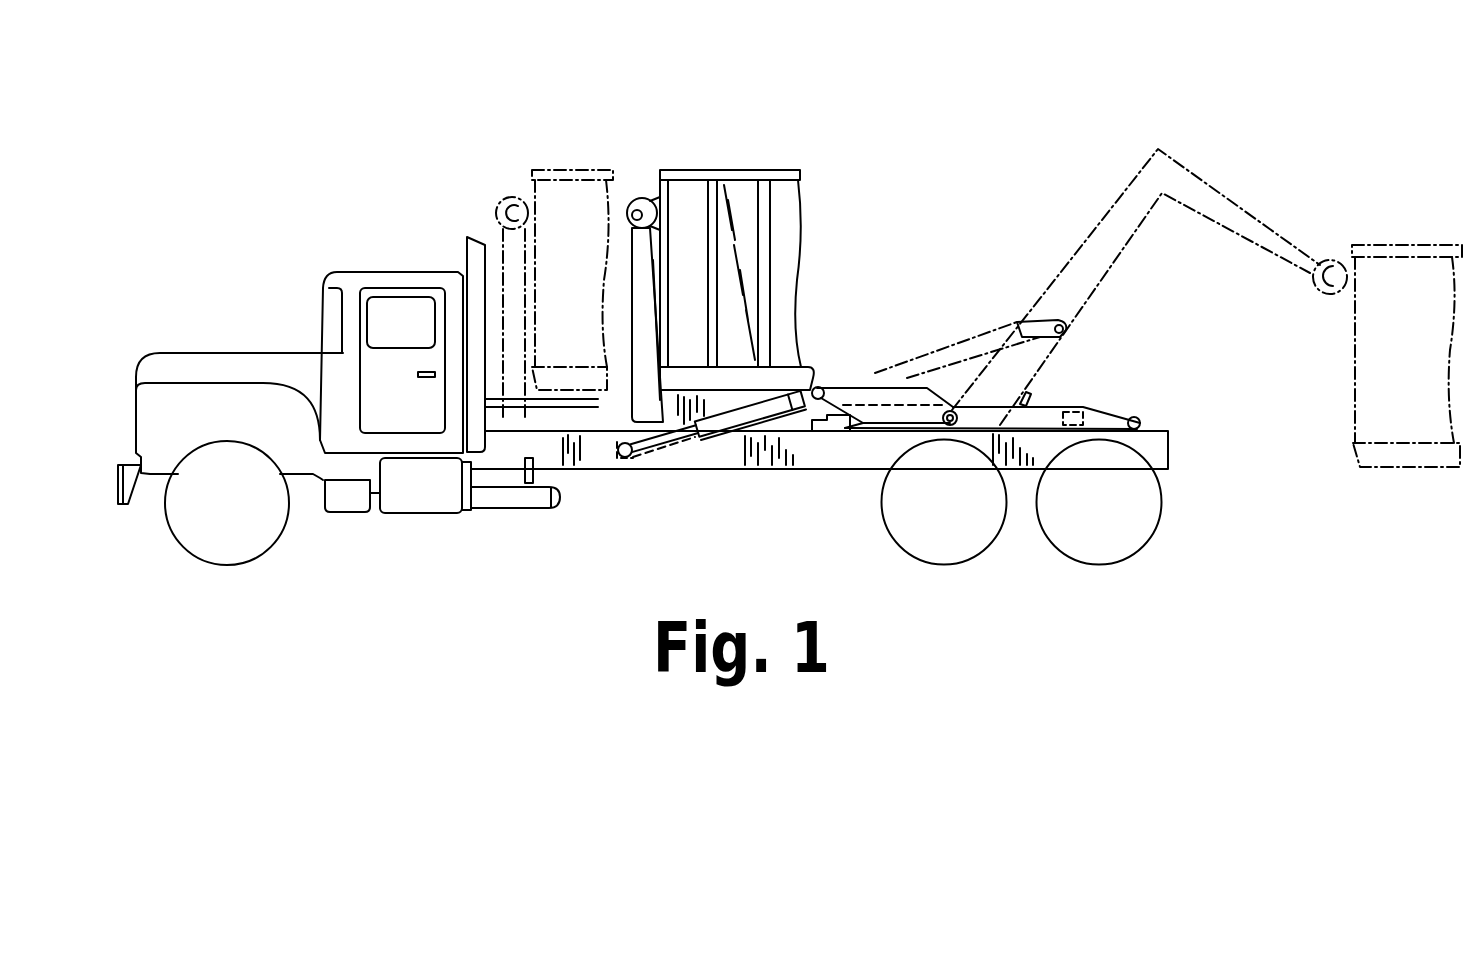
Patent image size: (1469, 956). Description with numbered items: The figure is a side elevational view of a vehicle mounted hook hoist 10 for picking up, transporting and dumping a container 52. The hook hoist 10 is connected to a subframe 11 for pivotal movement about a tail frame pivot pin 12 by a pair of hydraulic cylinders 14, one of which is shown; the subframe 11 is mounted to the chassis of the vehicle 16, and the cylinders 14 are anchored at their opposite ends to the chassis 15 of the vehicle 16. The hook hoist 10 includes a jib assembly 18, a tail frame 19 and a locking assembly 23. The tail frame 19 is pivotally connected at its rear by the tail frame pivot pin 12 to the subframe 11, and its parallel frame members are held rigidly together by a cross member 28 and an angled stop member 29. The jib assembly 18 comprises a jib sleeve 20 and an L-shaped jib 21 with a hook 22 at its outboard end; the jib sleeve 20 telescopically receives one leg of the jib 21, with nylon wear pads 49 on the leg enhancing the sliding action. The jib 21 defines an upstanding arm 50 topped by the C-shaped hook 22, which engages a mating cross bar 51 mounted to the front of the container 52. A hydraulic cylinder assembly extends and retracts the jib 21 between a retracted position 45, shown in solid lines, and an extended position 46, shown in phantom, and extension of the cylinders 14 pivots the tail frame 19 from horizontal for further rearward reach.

The vehicle mounted hook hoist 10 is at (862, 155).
The subframe 11 is at (587, 430).
The tail frame pivot pin 12 is at (1147, 420).
The hydraulic cylinders 14 is at (750, 427).
The chassis 15 is at (633, 470).
The vehicle 16 is at (253, 292).
The jib assembly 18 is at (833, 370).
The tail frame 19 is at (1038, 417).
The jib sleeve 20 is at (700, 407).
The L-shaped jib 21 is at (627, 245).
The hook 22 is at (618, 197).
The locking assembly 23 is at (832, 427).
The cross member 28 is at (1097, 417).
The angled stop member 29 is at (1027, 397).
The retracted position 45 is at (661, 150).
The extended position 46 is at (478, 198).
The nylon wear pads 49 is at (1233, 180).
The upstanding arm 50 is at (643, 305).
The cross bar 51 is at (657, 200).
The container 52 is at (755, 175).